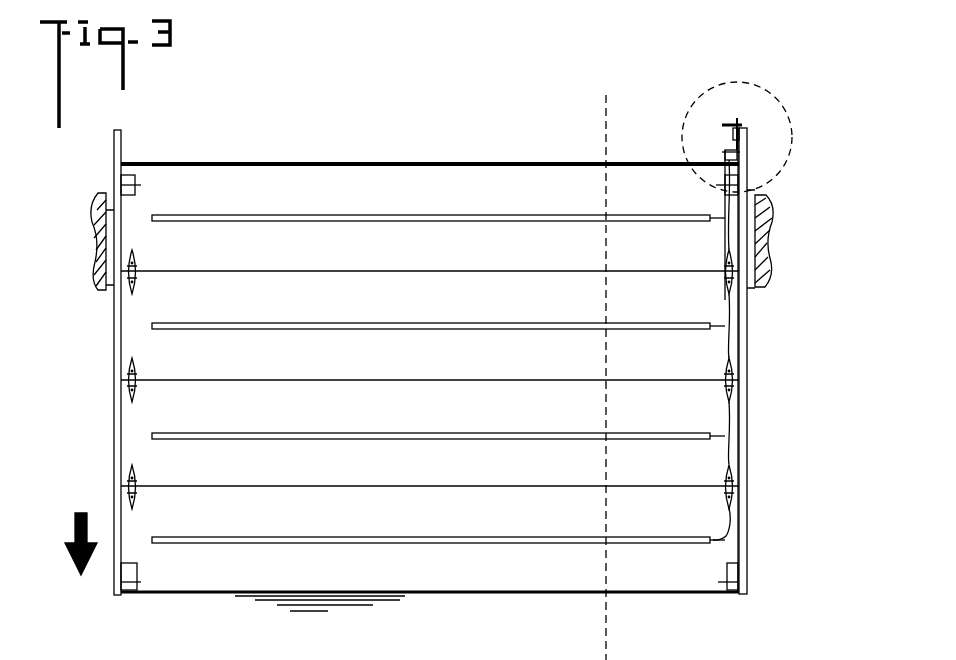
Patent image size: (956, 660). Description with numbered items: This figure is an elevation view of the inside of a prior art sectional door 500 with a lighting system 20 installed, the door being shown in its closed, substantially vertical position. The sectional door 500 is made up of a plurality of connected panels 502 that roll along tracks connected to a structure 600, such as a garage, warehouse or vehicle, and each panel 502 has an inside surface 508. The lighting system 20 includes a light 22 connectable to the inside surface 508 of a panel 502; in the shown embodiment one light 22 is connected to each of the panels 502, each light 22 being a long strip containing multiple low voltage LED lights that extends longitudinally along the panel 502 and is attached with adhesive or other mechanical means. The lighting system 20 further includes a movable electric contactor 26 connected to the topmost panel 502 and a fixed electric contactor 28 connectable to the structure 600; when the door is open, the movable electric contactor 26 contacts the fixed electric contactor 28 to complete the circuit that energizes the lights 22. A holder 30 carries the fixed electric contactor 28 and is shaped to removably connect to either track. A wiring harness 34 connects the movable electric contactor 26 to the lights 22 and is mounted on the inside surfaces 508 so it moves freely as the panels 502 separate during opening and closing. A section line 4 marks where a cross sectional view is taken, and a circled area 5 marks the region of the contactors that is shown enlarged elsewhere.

The lighting system 20 is at (778, 70).
The light 22 is at (288, 215).
The movable electric contactor 26 is at (726, 153).
The fixed electric contactor 28 is at (729, 123).
The holder 30 is at (740, 126).
The wiring harness 34 is at (727, 242).
The section line 4- 4 is at (640, 125).
The area 5 is at (700, 98).
The sectional door 500 is at (293, 118).
The panel 502 is at (160, 512).
The inside surface 508 is at (470, 205).
The structure 600 is at (96, 226).